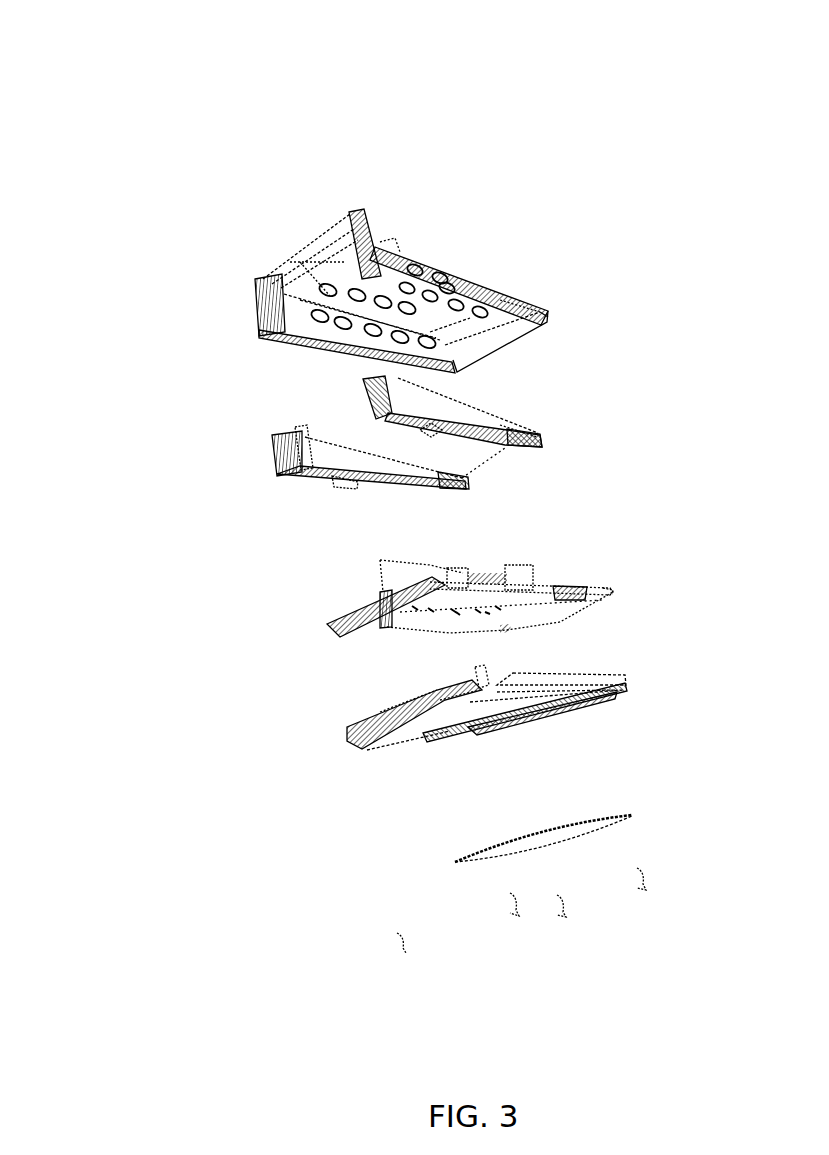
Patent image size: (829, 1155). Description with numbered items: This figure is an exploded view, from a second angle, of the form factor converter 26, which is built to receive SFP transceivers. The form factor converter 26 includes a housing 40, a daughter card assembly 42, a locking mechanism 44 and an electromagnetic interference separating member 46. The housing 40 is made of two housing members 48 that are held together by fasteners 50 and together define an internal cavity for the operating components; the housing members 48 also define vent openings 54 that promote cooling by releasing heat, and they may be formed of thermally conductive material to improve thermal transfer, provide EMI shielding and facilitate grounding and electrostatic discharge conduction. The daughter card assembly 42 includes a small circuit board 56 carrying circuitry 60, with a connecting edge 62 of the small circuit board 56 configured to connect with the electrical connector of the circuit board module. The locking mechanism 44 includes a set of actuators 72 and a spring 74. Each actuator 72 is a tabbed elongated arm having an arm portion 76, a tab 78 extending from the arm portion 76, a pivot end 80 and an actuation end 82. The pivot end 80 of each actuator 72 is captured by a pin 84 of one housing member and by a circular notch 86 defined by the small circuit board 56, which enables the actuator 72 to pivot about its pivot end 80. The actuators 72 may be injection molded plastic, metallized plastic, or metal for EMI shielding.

The form factor converter 26 is at (101, 96).
The housing 40 is at (256, 171).
The daughter card assembly 42 is at (609, 530).
The locking mechanism 44 is at (553, 393).
The electromagnetic interference (EMI) separating member 46 is at (345, 567).
The housing members 48 is at (575, 181).
The fasteners 50 is at (570, 948).
The vent openings 54 is at (405, 251).
The small circuit board 56 is at (537, 607).
The circuitry 60 is at (414, 622).
The connecting edge 62 is at (632, 591).
The actuators 72 is at (232, 370).
The spring 74 is at (513, 468).
The arm portion 76 is at (476, 420).
The tab 78 is at (433, 460).
The pivot end 80 is at (552, 431).
The actuation end 82 is at (349, 377).
The pin 84 is at (525, 302).
The circular notch 86 is at (568, 575).